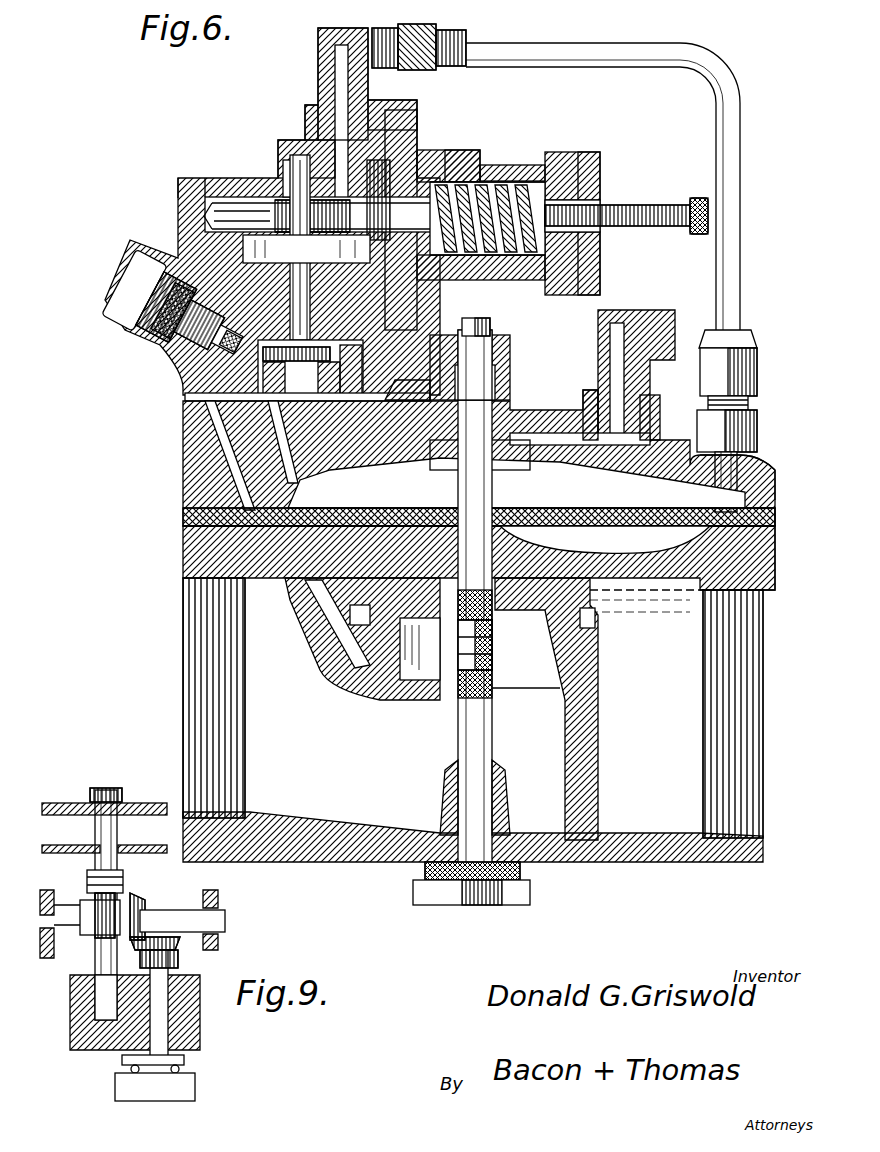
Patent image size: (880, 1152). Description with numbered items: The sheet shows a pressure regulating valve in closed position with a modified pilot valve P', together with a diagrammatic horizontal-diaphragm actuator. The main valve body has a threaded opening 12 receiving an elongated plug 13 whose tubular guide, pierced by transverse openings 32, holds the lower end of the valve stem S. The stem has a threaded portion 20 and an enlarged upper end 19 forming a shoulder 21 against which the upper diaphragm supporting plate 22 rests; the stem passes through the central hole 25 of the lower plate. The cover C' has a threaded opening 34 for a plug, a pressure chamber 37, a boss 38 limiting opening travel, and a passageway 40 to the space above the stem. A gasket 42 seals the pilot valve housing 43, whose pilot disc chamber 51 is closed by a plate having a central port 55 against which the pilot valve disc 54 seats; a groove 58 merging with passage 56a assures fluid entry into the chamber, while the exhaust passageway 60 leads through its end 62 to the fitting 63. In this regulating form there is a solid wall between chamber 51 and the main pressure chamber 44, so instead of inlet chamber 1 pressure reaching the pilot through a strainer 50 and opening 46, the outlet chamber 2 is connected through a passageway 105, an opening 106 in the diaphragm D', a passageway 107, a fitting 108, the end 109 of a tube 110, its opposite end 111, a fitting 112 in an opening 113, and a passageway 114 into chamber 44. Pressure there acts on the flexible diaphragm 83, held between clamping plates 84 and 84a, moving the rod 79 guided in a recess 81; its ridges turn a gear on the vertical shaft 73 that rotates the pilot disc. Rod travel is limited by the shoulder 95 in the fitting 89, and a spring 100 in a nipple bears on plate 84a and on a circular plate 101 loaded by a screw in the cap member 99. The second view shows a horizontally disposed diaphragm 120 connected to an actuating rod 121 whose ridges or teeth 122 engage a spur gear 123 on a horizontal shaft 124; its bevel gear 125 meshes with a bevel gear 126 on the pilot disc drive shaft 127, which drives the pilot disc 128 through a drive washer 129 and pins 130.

In FIG. 6, the inlet chamber 1 is at (287, 699).
In FIG. 6, the outlet chamber 2 is at (651, 711).
In FIG. 6, the threaded opening 12 is at (520, 872).
In FIG. 6, the elongated plug 13 is at (475, 905).
In FIG. 6, the upper end of valve stem 19 is at (475, 615).
In FIG. 6, the threaded portion 20 is at (462, 686).
In FIG. 6, the shoulder 21 is at (494, 500).
In FIG. 6, the upper diaphragm supporting plate 22 is at (560, 526).
In FIG. 6, the central hole 25 is at (362, 639).
In FIG. 6, the transverse openings 32 is at (442, 830).
In FIG. 6, the threaded opening 34 is at (512, 368).
In FIG. 6, the central port 55 is at (492, 330).
In FIG. 6, the pressure chamber 37 is at (545, 433).
In FIG. 6, the boss 38 is at (512, 455).
In FIG. 6, the passageway 40 is at (398, 392).
In FIG. 6, the gasket 42 is at (185, 399).
In FIG. 6, the pilot valve housing 43 is at (178, 238).
In FIG. 6, the main pressure chamber 44 is at (287, 180).
In FIG. 6, the opening 46 is at (245, 540).
In FIG. 6, the strainer 50 is at (178, 340).
In FIG. 6, the pilot disc chamber 51 is at (345, 352).
In FIG. 6, the pilot valve disc 54 is at (362, 360).
In FIG. 6, the passage 56a is at (258, 468).
In FIG. 6, the groove 58 is at (330, 485).
In FIG. 6, the exhaust passageway 60 is at (590, 395).
In FIG. 6, the end of passageway 62 is at (645, 432).
In FIG. 6, the fitting 63 is at (652, 312).
In FIG. 6, the vertical shaft 73 is at (312, 262).
In FIG. 6, the rod 79 is at (228, 182).
In FIG. 6, the recess 81 is at (205, 212).
In FIG. 6, the flexible diaphragm 83 is at (400, 102).
In FIG. 6, the clamping plate 84 is at (410, 290).
In FIG. 6, the clamping plate 84a is at (455, 160).
In FIG. 6, the fitting 89 is at (468, 150).
In FIG. 6, the shoulder 95 is at (480, 265).
In FIG. 6, the cap member 99 is at (600, 178).
In FIG. 6, the spring 100 is at (515, 165).
In FIG. 6, the circular plate 101 is at (556, 157).
In FIG. 6, the passageway 105 is at (775, 557).
In FIG. 6, the opening 106 is at (775, 527).
In FIG. 6, the passageway 107 is at (775, 499).
In FIG. 6, the fitting 108 is at (758, 430).
In FIG. 6, the end of tube 109 is at (740, 212).
In FIG. 6, the tube 110 is at (705, 82).
In FIG. 6, the end of tube 111 is at (490, 45).
In FIG. 6, the fitting 112 is at (320, 48).
In FIG. 6, the opening 113 is at (308, 118).
In FIG. 6, the passageway 114 is at (330, 135).
In FIG. 6, the pilot valve P' is at (160, 175).
In FIG. 6, the cover C' is at (744, 462).
In FIG. 6, the diaphragm D' is at (456, 563).
In FIG. 6, the valve stem S is at (458, 738).
In FIG. 9, the horizontally disposed diaphragm 120 is at (52, 805).
In FIG. 9, the actuating rod 121 is at (97, 965).
In FIG. 9, the ridges or teeth 122 is at (87, 880).
In FIG. 9, the spur gear 123 is at (125, 895).
In FIG. 9, the horizontal shaft 124 is at (225, 912).
In FIG. 9, the bevel gear 125 is at (140, 898).
In FIG. 9, the bevel gear 126 is at (170, 948).
In FIG. 9, the pilot disc drive shaft 127 is at (160, 1030).
In FIG. 9, the pilot disc 128 is at (115, 1090).
In FIG. 9, the drive washer 129 is at (184, 1060).
In FIG. 9, the pins 130 is at (131, 1069).